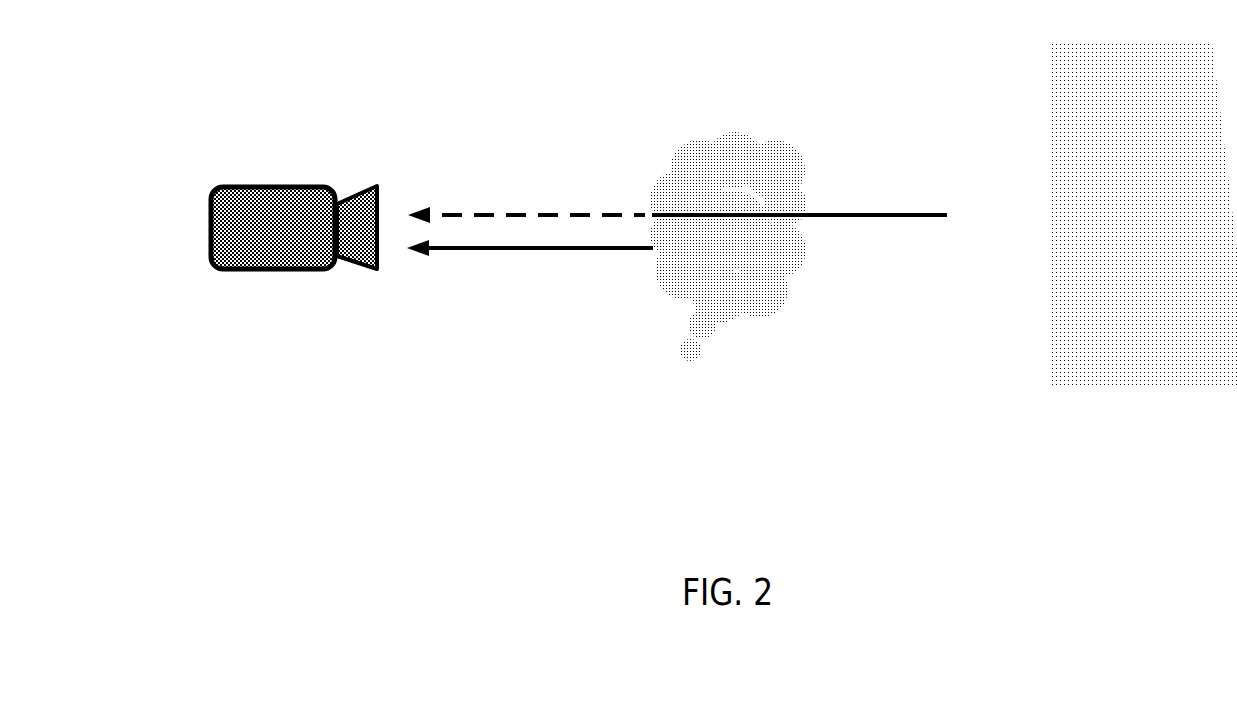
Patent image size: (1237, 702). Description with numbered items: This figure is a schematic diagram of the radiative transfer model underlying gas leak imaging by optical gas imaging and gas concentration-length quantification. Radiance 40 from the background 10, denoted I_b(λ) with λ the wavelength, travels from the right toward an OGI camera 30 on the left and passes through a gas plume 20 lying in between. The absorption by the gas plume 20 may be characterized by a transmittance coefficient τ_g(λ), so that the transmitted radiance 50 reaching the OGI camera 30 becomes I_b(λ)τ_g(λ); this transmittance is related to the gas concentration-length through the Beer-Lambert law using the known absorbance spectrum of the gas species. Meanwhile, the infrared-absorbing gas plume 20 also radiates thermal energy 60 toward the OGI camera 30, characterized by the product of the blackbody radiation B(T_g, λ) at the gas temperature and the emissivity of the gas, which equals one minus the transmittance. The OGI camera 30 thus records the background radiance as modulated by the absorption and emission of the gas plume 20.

The background 10 is at (1110, 250).
The gas plume 20 is at (745, 170).
The OGI camera 30 is at (265, 205).
The radiance 40 is at (910, 214).
The transmitted radiance 50 is at (608, 214).
The thermal energy 60 is at (633, 248).